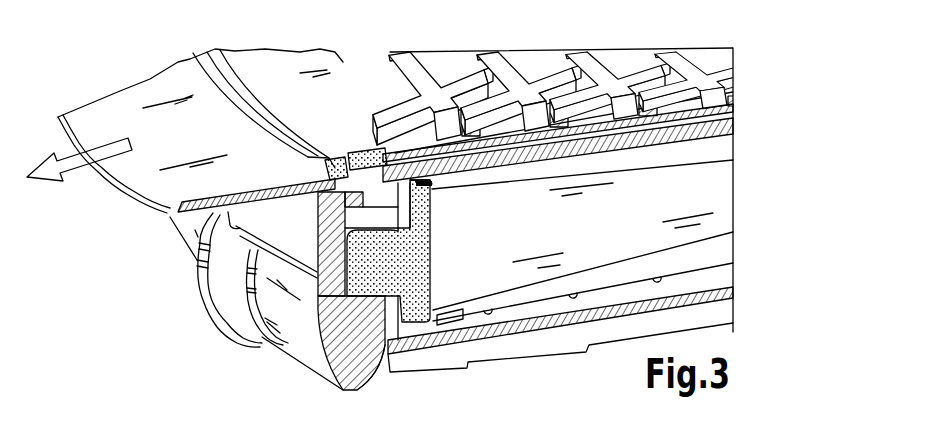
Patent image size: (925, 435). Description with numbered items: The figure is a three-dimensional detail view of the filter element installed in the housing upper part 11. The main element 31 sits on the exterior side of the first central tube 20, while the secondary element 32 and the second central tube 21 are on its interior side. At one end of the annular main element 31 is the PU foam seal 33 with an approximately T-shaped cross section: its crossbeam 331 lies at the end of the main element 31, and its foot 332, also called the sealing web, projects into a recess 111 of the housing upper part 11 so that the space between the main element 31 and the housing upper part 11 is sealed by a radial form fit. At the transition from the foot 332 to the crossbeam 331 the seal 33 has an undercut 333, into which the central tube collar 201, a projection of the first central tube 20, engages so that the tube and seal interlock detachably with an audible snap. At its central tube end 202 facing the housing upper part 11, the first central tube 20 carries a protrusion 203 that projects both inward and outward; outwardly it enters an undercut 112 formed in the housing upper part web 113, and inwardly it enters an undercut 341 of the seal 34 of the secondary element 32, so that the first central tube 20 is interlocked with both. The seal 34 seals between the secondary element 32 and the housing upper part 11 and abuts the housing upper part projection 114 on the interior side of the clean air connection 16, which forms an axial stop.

The housing upper part 11 is at (295, 340).
The clean air connection 16 is at (68, 120).
The first central tube 20 is at (718, 123).
The second central tube 21 is at (694, 72).
The main element 31 is at (707, 268).
The secondary element 32 is at (728, 104).
The seal 33 is at (430, 352).
The seal 34 is at (328, 156).
The recess 111 is at (370, 388).
The undercut 112 is at (412, 212).
The housing upper part web 113 is at (320, 217).
The housing upper part projection 114 is at (300, 156).
The central tube collar 201 is at (397, 200).
The central tube end 202 is at (312, 186).
The protrusion 203 is at (357, 152).
The crossbeam 331 is at (404, 325).
The foot 332 is at (317, 348).
The undercut 333 is at (405, 243).
The undercut 341 is at (378, 148).